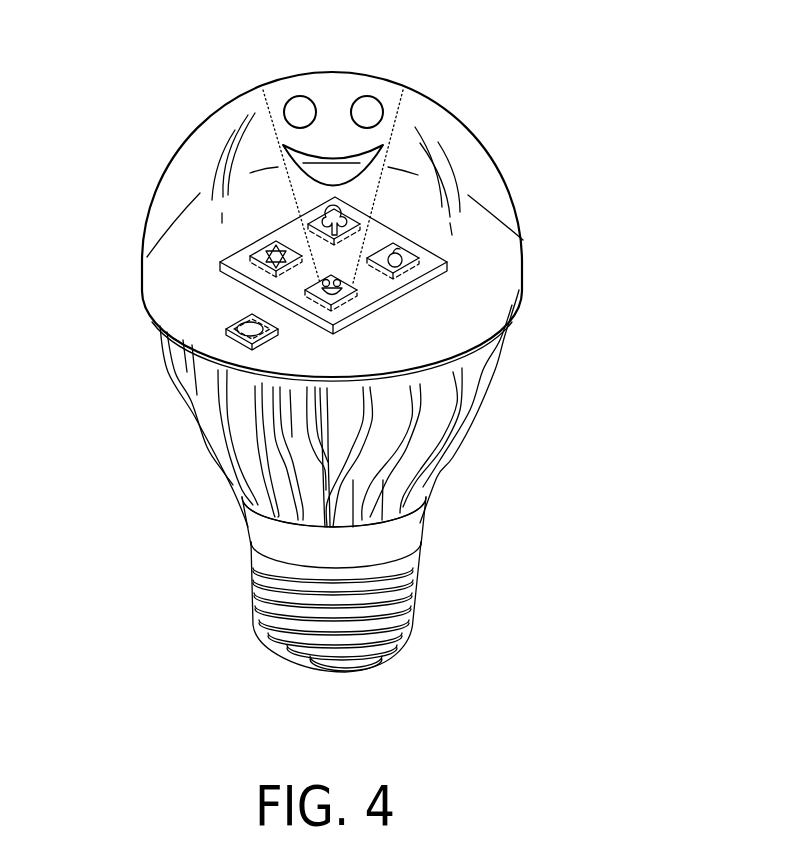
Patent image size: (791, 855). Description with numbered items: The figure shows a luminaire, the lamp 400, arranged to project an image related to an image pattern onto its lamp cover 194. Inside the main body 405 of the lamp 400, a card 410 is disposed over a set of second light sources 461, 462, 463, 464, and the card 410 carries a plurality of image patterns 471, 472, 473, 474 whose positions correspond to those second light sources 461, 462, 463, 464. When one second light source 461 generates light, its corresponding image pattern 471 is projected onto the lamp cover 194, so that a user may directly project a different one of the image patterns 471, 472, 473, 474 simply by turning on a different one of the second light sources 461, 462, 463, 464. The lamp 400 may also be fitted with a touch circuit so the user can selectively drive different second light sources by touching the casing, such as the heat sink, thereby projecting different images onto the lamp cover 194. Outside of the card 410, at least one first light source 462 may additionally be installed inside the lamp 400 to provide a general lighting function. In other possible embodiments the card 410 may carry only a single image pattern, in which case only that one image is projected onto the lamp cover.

The lamp 400 is at (156, 143).
The lamp cover 194 is at (460, 140).
The main body 405 is at (176, 387).
The card 410 is at (248, 277).
The second light source 461 is at (305, 302).
The second light source 462 is at (414, 246).
The second light source 463 is at (362, 215).
The second light source 464 is at (305, 222).
The image pattern 471 is at (351, 301).
The image pattern 472 is at (412, 266).
The image pattern 473 is at (321, 211).
The image pattern 474 is at (258, 255).